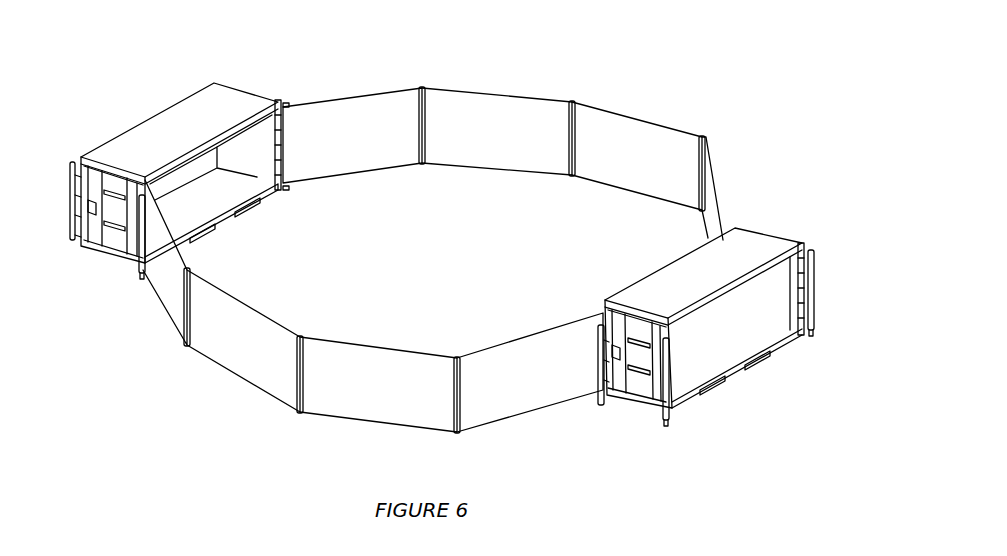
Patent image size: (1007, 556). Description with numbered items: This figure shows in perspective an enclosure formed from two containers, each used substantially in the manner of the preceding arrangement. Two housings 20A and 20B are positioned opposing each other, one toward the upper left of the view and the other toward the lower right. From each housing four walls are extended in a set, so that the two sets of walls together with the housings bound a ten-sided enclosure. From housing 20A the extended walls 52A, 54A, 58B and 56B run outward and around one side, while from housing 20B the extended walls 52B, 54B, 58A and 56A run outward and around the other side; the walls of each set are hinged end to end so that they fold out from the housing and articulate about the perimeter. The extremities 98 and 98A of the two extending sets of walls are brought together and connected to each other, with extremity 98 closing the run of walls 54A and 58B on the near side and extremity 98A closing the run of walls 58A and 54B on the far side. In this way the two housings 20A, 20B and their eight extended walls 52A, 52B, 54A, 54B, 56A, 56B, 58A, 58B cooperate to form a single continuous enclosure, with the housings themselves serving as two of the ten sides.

The housing 20A is at (148, 118).
The housing 20B is at (670, 267).
The first side panel 52A is at (172, 285).
The second side panel 52B is at (717, 183).
The first angled panel 54A is at (232, 348).
The second angled panel 54B is at (652, 120).
The first wall panel 56A is at (358, 98).
The second wall panel 56B is at (520, 340).
The first end panel 58A is at (488, 95).
The second end panel 58B is at (385, 347).
The extremity 98 is at (298, 337).
The extremity 98A is at (571, 103).